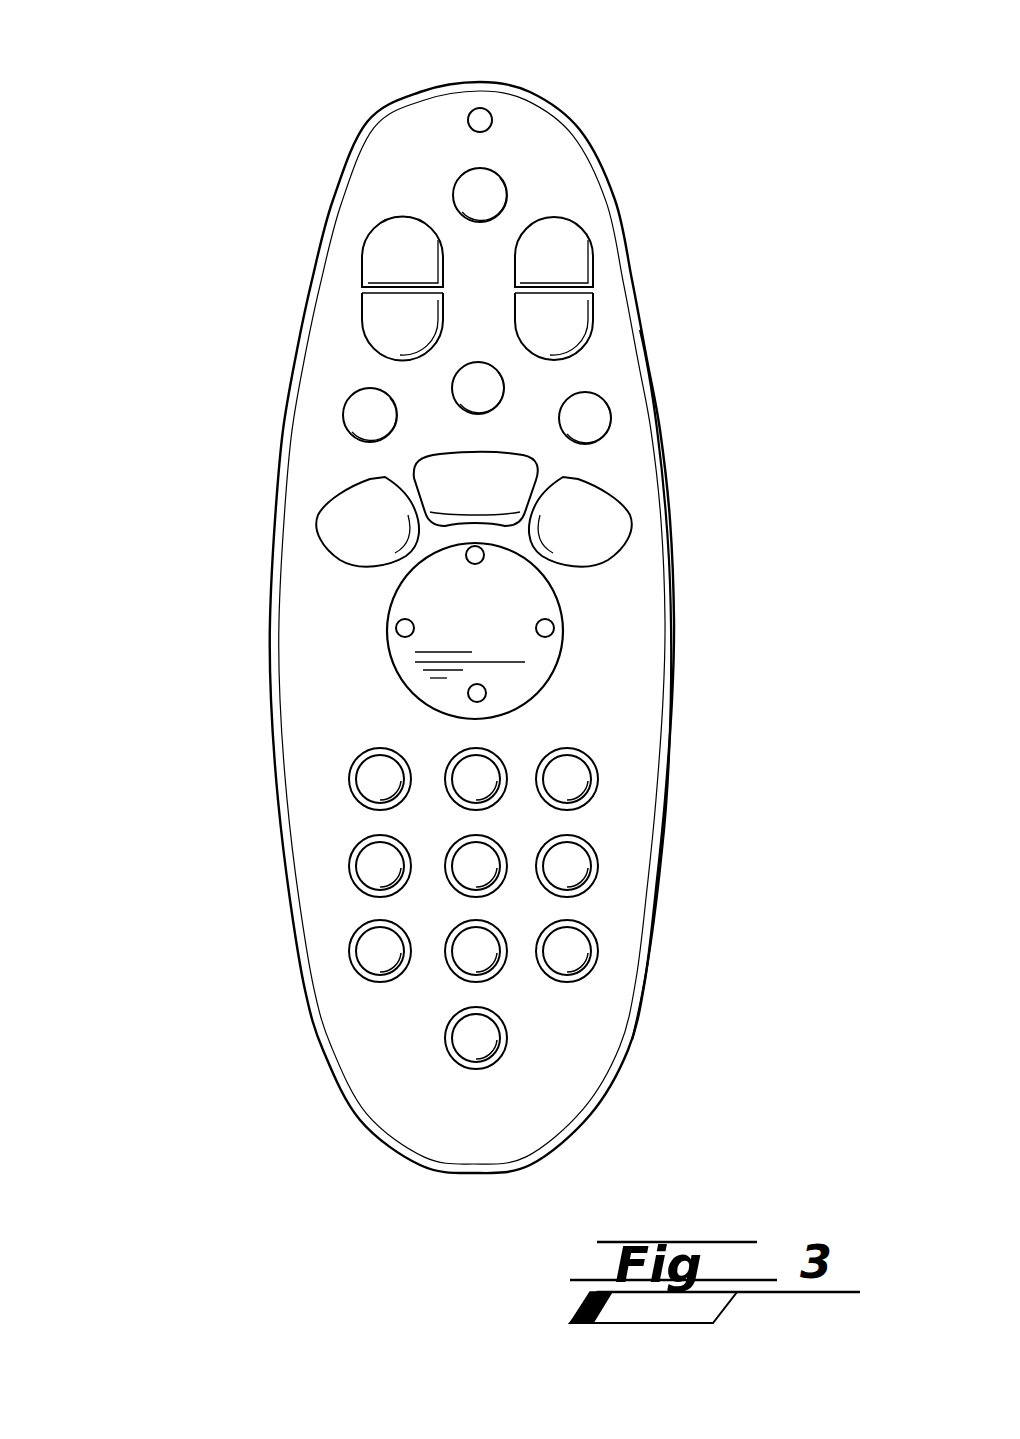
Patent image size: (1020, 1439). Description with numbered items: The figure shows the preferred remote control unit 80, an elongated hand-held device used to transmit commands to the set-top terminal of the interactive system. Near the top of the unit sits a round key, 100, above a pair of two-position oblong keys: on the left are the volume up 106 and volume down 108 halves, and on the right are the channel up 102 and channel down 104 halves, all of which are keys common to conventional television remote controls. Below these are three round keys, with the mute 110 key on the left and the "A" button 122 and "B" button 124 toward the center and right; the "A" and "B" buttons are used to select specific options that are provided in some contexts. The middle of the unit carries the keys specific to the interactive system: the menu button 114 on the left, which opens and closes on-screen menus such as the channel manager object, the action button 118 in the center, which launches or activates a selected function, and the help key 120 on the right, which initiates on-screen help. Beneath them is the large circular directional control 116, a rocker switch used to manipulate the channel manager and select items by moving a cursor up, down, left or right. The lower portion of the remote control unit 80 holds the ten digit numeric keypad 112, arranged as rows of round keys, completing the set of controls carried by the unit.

The remote control unit 80 is at (130, 818).
The power button 100 is at (462, 187).
The channel up key 102 is at (567, 252).
The channel down key 104 is at (582, 318).
The volume up key 106 is at (400, 243).
The volume down key 108 is at (377, 308).
The mute key 110 is at (357, 413).
The numeric keypad 112 is at (640, 798).
The menu button 114 is at (377, 539).
The directional control 116 is at (507, 635).
The action button 118 is at (497, 502).
The help key 120 is at (560, 540).
The "A" button 122 is at (507, 392).
The "B" button 124 is at (598, 424).